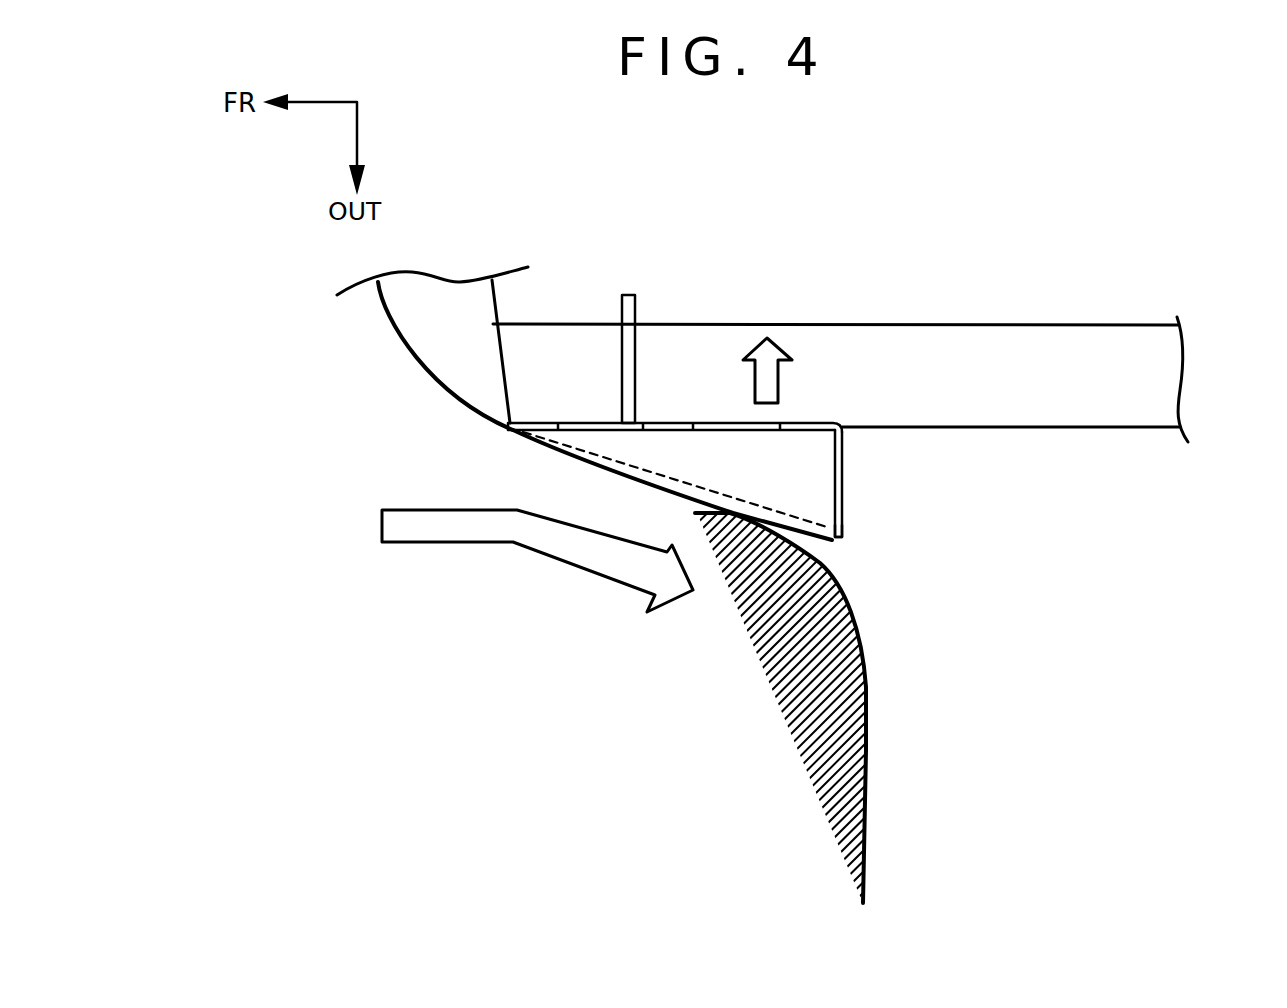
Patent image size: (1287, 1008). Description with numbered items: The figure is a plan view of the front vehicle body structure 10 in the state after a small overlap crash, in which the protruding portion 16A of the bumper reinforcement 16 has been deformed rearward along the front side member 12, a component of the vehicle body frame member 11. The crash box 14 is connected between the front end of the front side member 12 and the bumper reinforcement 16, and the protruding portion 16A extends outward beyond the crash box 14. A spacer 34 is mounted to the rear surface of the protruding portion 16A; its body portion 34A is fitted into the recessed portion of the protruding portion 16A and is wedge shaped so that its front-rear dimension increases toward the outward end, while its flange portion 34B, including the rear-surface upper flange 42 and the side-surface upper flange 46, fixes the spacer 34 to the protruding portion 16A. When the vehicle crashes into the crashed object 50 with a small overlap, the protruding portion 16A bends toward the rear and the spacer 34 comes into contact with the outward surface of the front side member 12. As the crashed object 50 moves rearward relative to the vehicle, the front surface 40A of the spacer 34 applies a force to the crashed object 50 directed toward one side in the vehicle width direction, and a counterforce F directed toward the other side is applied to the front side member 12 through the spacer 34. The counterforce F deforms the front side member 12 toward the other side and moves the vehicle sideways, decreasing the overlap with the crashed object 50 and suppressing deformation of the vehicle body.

The front vehicle body structure 10 is at (843, 215).
The vehicle body frame member 11 is at (840, 333).
The front side member 12 is at (992, 323).
The crash box 14 is at (573, 318).
The bumper reinforcement 16 is at (412, 348).
The protruding portion 16A is at (572, 448).
The spacer 34 is at (817, 420).
The body portion 34A is at (812, 502).
The flange portion 34B is at (758, 399).
The front surface 40A is at (690, 483).
The rear-surface upper flange 42 is at (713, 422).
The side-surface upper flange 46 is at (843, 457).
The crashed object 50 is at (867, 680).
The counterforce F is at (780, 358).